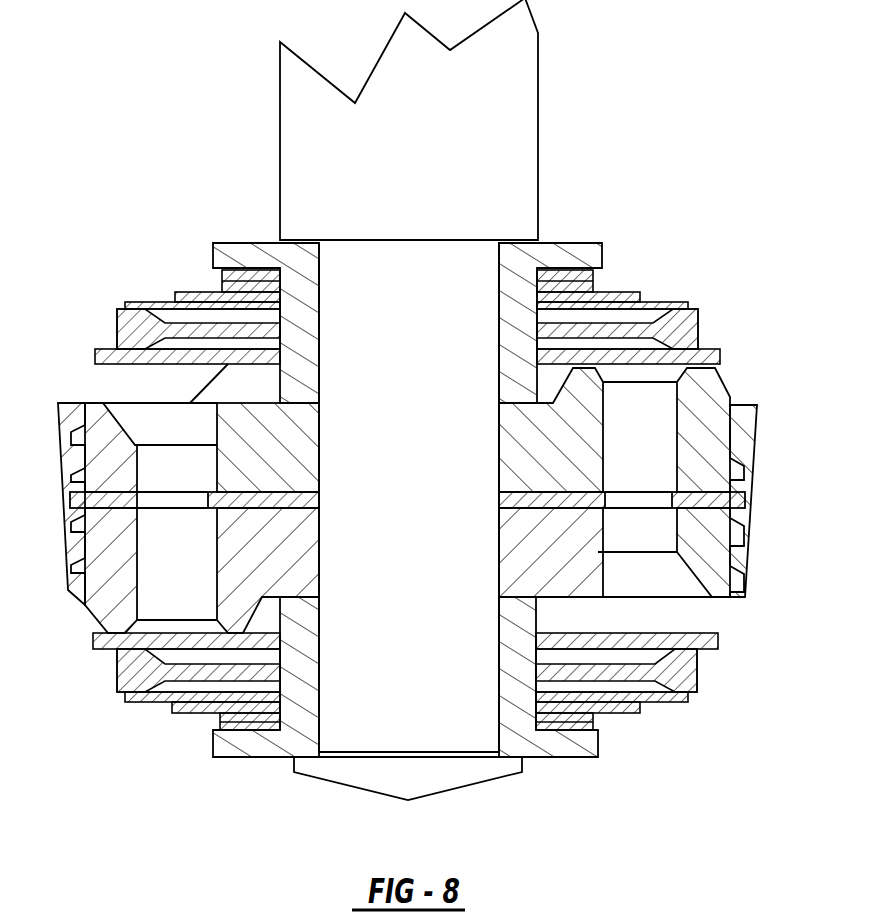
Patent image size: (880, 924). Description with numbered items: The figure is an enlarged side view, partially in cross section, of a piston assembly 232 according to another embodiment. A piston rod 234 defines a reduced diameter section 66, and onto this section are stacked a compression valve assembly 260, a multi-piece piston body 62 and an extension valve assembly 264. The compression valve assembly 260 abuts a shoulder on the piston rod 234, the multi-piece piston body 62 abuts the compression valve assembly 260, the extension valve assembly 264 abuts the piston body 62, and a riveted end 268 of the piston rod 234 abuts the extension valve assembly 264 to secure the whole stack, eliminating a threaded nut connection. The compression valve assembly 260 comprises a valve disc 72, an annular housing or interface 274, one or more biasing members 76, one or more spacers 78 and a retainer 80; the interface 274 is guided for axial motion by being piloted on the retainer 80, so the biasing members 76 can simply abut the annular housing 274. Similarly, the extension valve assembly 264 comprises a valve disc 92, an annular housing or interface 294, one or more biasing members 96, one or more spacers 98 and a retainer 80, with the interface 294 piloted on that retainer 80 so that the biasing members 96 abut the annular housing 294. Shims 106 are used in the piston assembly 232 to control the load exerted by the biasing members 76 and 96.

The compression valve assembly 260 is at (198, 150).
The piston rod 234 is at (428, 160).
The reduced diameter section 66 is at (412, 464).
The retainer 80 is at (572, 247).
The spacers 78 is at (581, 271).
The biasing members 76 is at (633, 298).
The annular housing or interface 274 is at (692, 328).
The valve disc 72 is at (717, 356).
The shims 106 is at (291, 405).
The piston assembly 232 is at (115, 532).
The multi-piece piston body 62 is at (115, 588).
The extension valve assembly 264 is at (155, 752).
The valve disc 92 is at (700, 642).
The annular housing or interface 294 is at (675, 672).
The biasing members 96 is at (652, 703).
The spacers 98 is at (590, 723).
The riveted end 268 is at (447, 778).